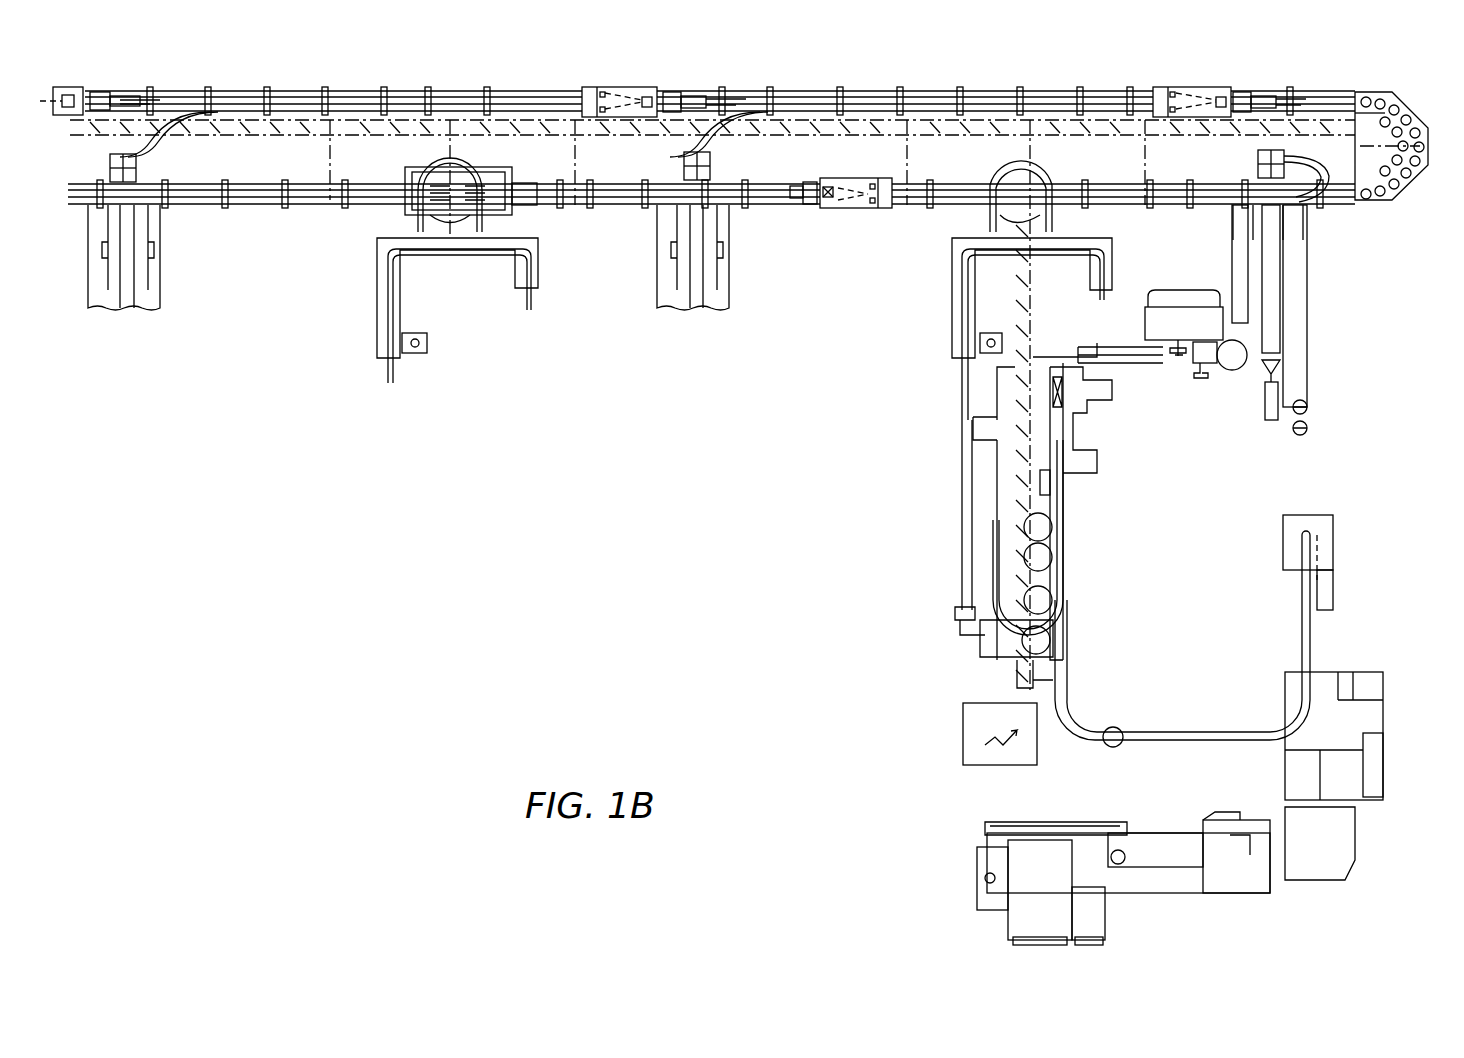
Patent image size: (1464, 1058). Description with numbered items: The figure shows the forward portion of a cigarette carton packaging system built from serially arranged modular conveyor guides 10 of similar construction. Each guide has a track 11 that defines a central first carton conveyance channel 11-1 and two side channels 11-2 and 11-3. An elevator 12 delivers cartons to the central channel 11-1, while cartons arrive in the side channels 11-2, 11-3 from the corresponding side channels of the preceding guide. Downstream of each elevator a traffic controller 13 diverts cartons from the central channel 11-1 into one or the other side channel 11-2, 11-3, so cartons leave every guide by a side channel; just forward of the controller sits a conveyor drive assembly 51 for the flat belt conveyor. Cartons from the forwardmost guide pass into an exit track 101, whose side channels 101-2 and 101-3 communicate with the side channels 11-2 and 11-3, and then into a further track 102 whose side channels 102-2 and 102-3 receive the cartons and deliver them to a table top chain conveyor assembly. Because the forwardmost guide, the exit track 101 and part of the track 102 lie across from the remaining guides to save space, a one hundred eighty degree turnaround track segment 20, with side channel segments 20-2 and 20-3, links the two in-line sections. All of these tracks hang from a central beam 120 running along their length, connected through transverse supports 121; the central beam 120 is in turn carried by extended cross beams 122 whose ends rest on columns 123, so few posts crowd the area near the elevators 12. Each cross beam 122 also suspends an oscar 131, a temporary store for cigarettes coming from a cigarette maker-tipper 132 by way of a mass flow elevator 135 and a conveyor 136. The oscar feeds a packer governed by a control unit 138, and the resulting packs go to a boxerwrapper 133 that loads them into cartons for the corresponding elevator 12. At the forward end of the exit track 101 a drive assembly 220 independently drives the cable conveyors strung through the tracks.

The modular conveyor guide 10 is at (406, 85).
The track 11 is at (463, 93).
The first carton conveyance channel 11-1 is at (235, 98).
The second carton conveyance channel 11-2 is at (296, 110).
The third carton conveyance channel 11-3 is at (280, 75).
The elevator 12 is at (108, 165).
The traffic controller 13 is at (60, 78).
The turnaround track segment 20 is at (1407, 112).
The side channel segment 20-2 is at (1368, 200).
The side channel segment 20-3 is at (1408, 188).
The conveyor drive assembly 51 is at (125, 84).
The exit track 101 is at (545, 202).
The side channel of exit track 101-2 is at (618, 210).
The side channel of exit track 101-3 is at (598, 218).
The further track 102 is at (322, 210).
The side channel of further track 102-2 is at (267, 226).
The side channel of further track 102-3 is at (280, 208).
The central beam 120 is at (364, 143).
The support 121 is at (331, 160).
The cross beam 122 is at (453, 307).
The column 123 is at (1004, 152).
The oscar 131 is at (1066, 566).
The cigarette maker-tipper 132 is at (1265, 797).
The boxerwrapper 133 is at (1215, 285).
The mass flow elevator 135 is at (1330, 560).
The conveyor 136 is at (1215, 713).
The control unit 138 is at (988, 760).
The drive assembly 220 is at (495, 168).